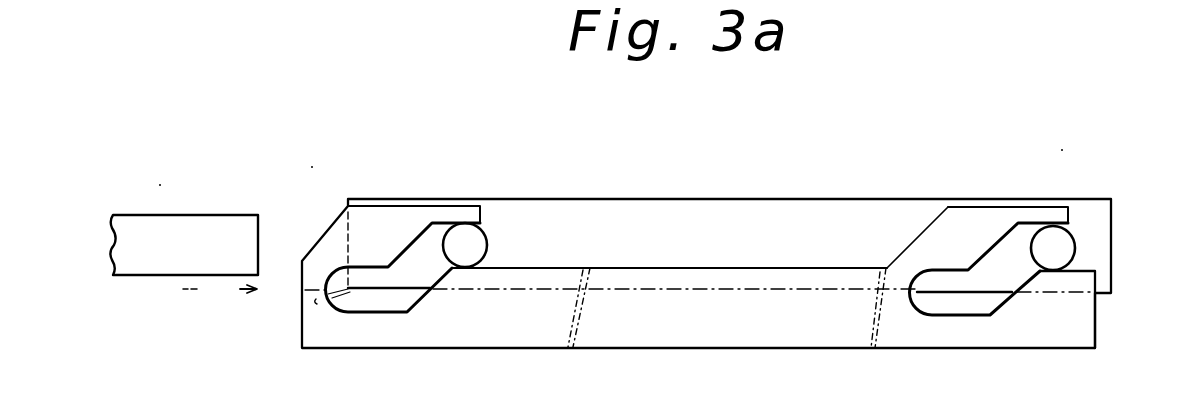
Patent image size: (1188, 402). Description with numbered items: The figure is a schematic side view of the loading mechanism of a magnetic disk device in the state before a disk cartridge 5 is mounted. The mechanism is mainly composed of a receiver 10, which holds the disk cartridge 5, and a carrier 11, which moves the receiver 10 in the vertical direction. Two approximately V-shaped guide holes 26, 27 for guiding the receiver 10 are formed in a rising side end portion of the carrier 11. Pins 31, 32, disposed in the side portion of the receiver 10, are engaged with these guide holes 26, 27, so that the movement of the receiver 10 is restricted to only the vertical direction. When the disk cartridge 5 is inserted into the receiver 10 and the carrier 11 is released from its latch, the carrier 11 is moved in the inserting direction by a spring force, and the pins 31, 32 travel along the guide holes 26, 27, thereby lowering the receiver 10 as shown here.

The disk cartridge 5 is at (229, 215).
The receiver 10 is at (930, 199).
The carrier 11 is at (1083, 317).
The guide hole 26 is at (372, 312).
The guide hole 27 is at (955, 314).
The pin 31 is at (482, 241).
The pin 32 is at (1075, 237).